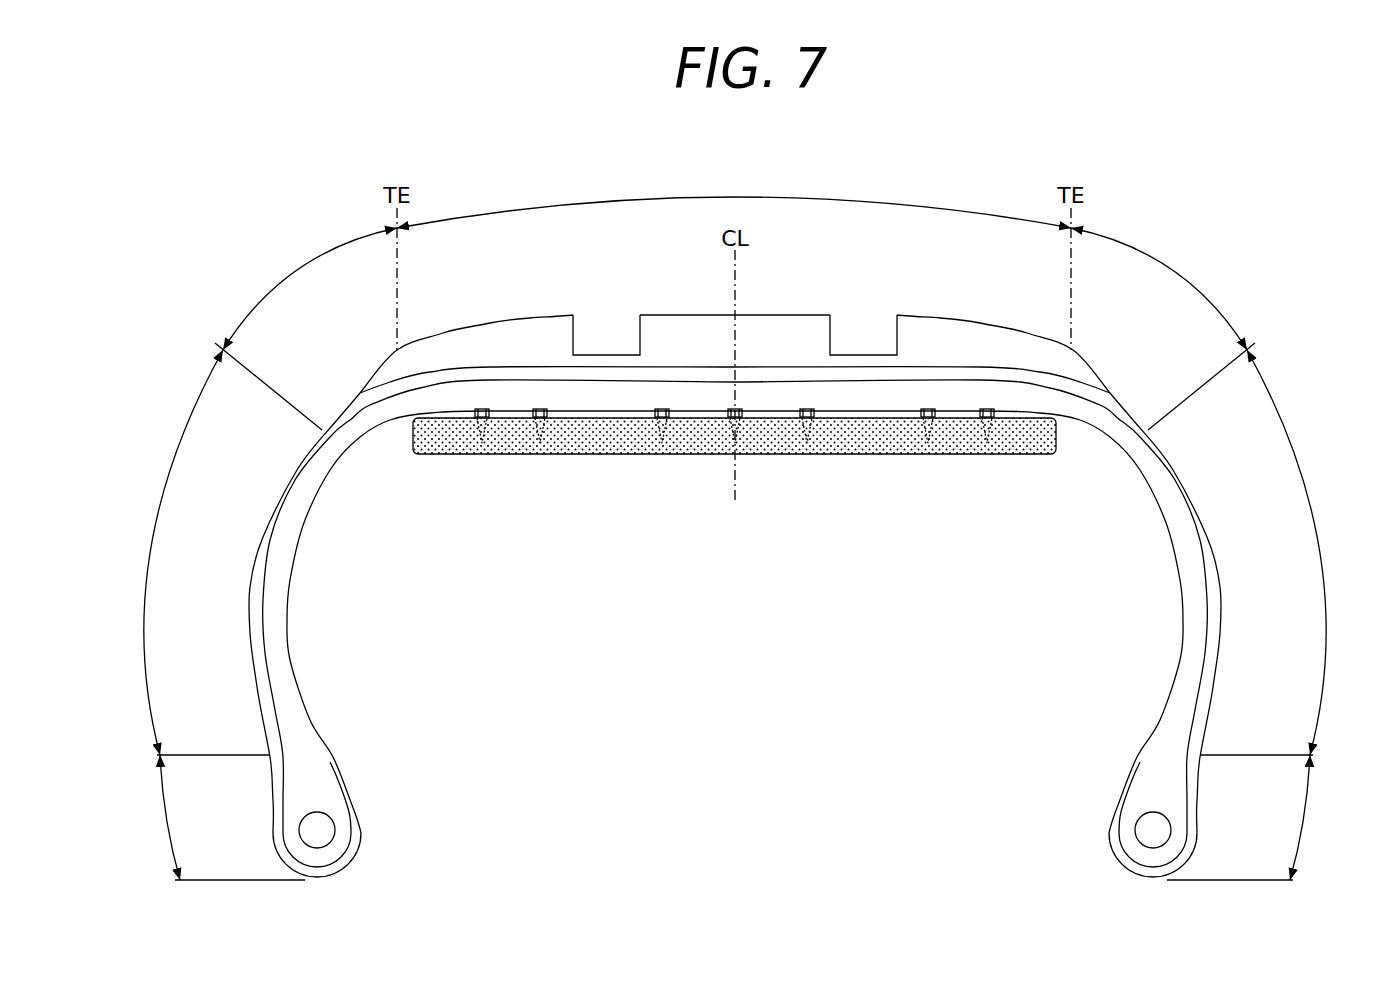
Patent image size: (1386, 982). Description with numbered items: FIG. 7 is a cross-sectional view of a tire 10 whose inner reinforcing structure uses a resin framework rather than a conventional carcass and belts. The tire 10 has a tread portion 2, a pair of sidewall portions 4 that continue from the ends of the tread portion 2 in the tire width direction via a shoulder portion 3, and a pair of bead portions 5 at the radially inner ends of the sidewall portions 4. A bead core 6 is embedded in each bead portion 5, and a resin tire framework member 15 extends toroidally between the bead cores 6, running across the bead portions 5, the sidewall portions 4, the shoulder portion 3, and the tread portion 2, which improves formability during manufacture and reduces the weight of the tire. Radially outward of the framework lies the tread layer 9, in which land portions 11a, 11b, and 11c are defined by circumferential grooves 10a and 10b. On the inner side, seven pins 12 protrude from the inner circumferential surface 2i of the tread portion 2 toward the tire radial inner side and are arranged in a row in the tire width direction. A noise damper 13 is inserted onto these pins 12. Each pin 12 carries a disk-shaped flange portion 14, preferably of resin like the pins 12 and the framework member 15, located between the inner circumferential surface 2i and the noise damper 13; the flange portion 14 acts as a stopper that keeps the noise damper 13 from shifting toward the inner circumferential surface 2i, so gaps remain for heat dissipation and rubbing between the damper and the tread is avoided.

The tread portion 2 is at (734, 199).
The inner circumferential surface 2i is at (600, 413).
The shoulder portion 3 is at (735, 329).
The sidewall portion 4 is at (733, 552).
The bead portion 5 is at (733, 817).
The bead core 6 is at (1153, 830).
The tread layer 9 is at (521, 317).
The tire 10 is at (1127, 212).
The circumferential groove 10a is at (603, 334).
The circumferential groove 10b is at (862, 334).
The land portion 11a is at (475, 342).
The land portion 11b is at (696, 331).
The land portion 11c is at (972, 340).
The pin 12 is at (488, 440).
The noise damper 13 is at (874, 455).
The flange portion 14 is at (483, 408).
The resin tire framework member 15 is at (1176, 482).